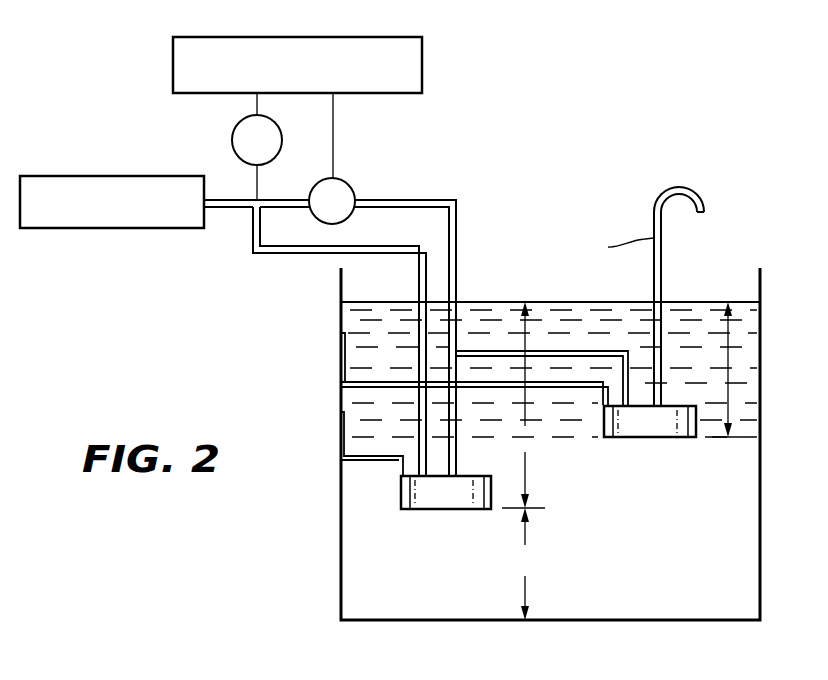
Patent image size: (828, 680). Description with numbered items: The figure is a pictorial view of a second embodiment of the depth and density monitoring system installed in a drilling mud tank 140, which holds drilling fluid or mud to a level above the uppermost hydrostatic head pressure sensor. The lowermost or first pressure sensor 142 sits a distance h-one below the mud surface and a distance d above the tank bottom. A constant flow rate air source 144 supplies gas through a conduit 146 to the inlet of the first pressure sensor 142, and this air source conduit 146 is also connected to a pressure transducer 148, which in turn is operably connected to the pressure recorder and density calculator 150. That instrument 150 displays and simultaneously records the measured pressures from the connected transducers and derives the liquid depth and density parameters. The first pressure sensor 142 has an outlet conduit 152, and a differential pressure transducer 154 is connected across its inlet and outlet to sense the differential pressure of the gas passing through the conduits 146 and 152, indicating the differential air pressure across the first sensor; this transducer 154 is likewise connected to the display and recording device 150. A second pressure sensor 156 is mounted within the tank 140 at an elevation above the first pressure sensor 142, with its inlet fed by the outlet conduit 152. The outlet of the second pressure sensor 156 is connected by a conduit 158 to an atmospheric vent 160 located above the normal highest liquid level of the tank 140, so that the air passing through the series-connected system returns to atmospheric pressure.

The drilling mud tank 140 is at (340, 517).
The first pressure sensor 142 is at (447, 495).
The constant flow rate air source 144 is at (112, 175).
The conduit 146 is at (292, 254).
The pressure transducer 148 is at (245, 133).
The pressure recorder and density calculator 150 is at (233, 37).
The outlet conduit 152 is at (458, 268).
The differential pressure transducer 154 is at (335, 194).
The second pressure sensor 156 is at (662, 428).
The conduit 158 is at (661, 288).
The atmospheric vent 160 is at (688, 188).